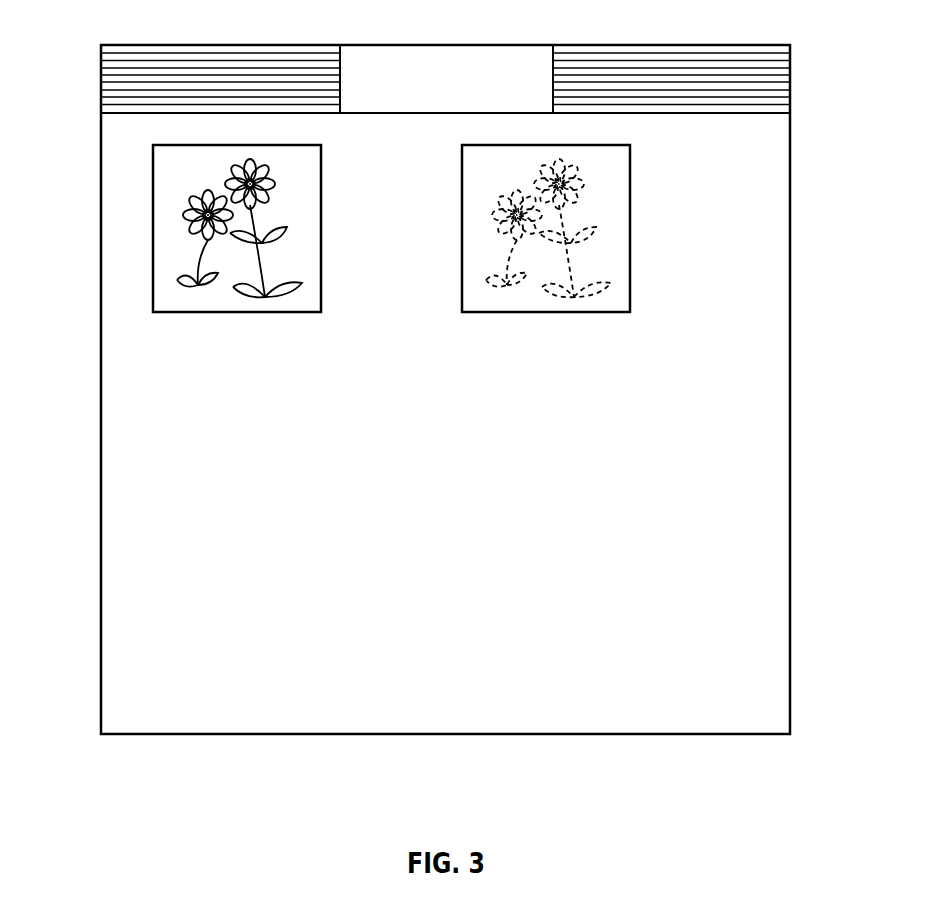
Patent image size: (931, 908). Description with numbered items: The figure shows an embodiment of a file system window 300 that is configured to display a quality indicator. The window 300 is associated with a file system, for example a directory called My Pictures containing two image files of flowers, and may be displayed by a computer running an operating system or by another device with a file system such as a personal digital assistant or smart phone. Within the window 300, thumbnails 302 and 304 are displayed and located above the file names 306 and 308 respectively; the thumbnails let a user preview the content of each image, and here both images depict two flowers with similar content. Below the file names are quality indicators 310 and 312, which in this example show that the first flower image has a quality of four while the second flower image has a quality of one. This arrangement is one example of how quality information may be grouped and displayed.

The window 300 is at (445, 45).
The thumbnail 302 is at (321, 227).
The thumbnail 304 is at (630, 227).
The file name 306 is at (126, 372).
The file name 308 is at (660, 377).
The quality indicator 310 is at (140, 414).
The quality indicator 312 is at (625, 409).